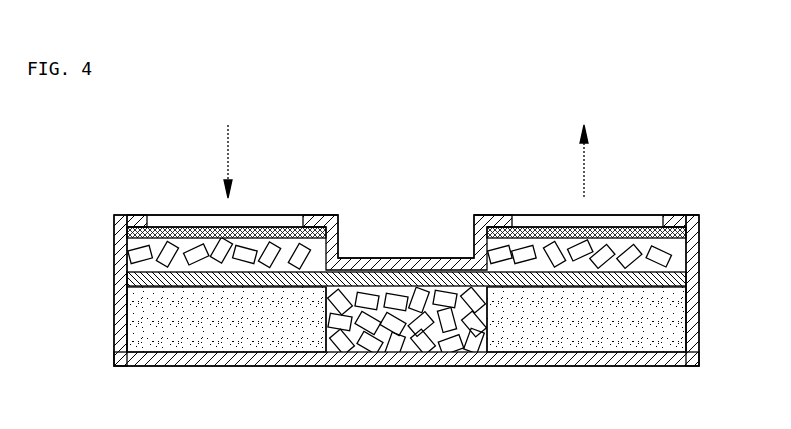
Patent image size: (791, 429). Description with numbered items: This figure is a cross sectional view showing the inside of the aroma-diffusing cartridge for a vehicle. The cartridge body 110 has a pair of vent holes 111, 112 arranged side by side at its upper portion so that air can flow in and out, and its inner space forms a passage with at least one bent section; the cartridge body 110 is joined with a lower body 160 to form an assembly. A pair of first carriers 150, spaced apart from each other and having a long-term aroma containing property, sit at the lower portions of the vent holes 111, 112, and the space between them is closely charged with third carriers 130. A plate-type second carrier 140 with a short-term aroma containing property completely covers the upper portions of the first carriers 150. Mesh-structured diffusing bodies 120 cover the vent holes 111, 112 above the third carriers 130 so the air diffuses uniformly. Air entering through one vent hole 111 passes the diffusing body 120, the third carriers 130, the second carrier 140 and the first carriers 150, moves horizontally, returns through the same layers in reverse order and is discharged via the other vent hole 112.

The cartridge body 110 is at (694, 312).
The vent hole 111 is at (296, 214).
The vent hole 112 is at (647, 215).
The diffusing body 120 is at (687, 234).
The third carriers 130 is at (131, 250).
The second carrier 140 is at (687, 277).
The first carriers 150 is at (667, 330).
The lower body 160 is at (652, 357).